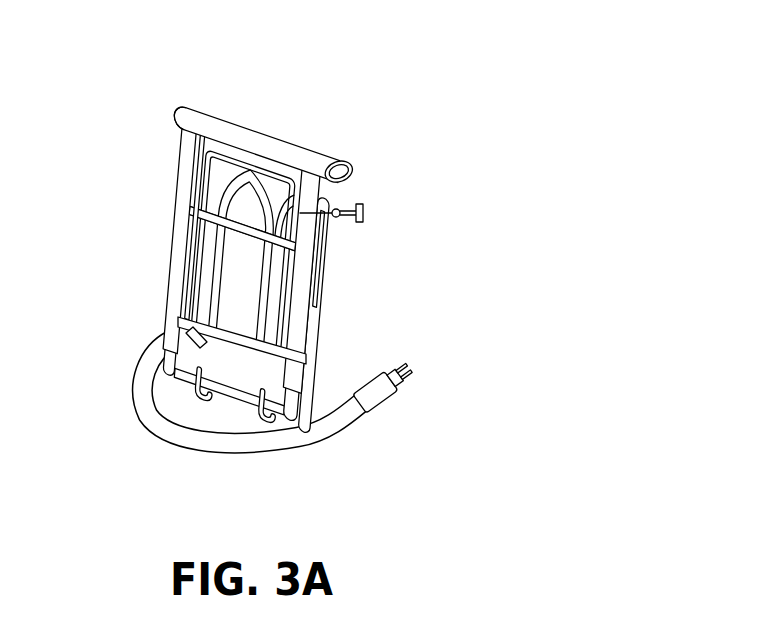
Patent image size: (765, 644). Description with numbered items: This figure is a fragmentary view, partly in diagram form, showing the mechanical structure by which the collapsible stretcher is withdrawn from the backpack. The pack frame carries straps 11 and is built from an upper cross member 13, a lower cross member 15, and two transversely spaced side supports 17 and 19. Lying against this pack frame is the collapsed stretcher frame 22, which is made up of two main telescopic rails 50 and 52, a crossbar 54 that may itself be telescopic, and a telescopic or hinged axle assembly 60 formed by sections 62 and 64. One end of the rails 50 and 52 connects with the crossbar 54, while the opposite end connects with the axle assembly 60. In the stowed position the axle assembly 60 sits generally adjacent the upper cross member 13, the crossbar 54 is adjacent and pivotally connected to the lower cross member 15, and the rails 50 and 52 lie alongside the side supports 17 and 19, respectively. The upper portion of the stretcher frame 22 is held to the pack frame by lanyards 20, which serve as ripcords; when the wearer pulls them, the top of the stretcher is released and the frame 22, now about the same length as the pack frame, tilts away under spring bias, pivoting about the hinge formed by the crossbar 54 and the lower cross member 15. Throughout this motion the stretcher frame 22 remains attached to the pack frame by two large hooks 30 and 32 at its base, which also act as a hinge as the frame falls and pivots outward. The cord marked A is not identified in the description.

The straps 11 is at (235, 197).
The upper cross member 13 is at (277, 173).
The lower cross member 15 is at (238, 395).
The side support 17 is at (197, 200).
The side support 19 is at (323, 291).
The lanyards 20 is at (366, 211).
The collapsed stretcher frame 22 is at (344, 256).
The hook 30 is at (262, 413).
The hook 32 is at (197, 393).
The telescopic rail 50 is at (300, 323).
The telescopic rail 52 is at (173, 217).
The crossbar 54 is at (225, 388).
The axle assembly 60 is at (225, 109).
The telescopic or hinged section 62 is at (341, 158).
The telescopic or hinged section 64 is at (167, 99).
The power cord A is at (307, 447).